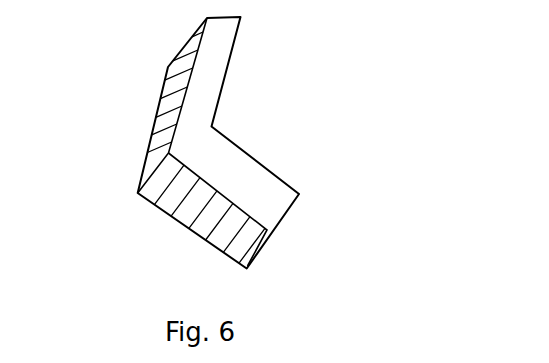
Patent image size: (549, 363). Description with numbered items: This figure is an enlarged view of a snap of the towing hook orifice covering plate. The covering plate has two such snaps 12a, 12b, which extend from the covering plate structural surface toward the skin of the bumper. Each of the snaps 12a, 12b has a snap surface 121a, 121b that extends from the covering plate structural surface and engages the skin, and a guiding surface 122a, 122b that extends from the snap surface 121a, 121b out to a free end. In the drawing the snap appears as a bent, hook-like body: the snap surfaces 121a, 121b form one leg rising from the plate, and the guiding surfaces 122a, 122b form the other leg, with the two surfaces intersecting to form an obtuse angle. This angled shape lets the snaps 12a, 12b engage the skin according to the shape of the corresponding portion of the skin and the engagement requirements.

The snap 12a is at (239, 143).
The snap 12b is at (222, 148).
The snap surface 121a is at (119, 105).
The snap surface 121b is at (162, 134).
The guiding surface 122a is at (176, 209).
The guiding surface 122b is at (210, 227).